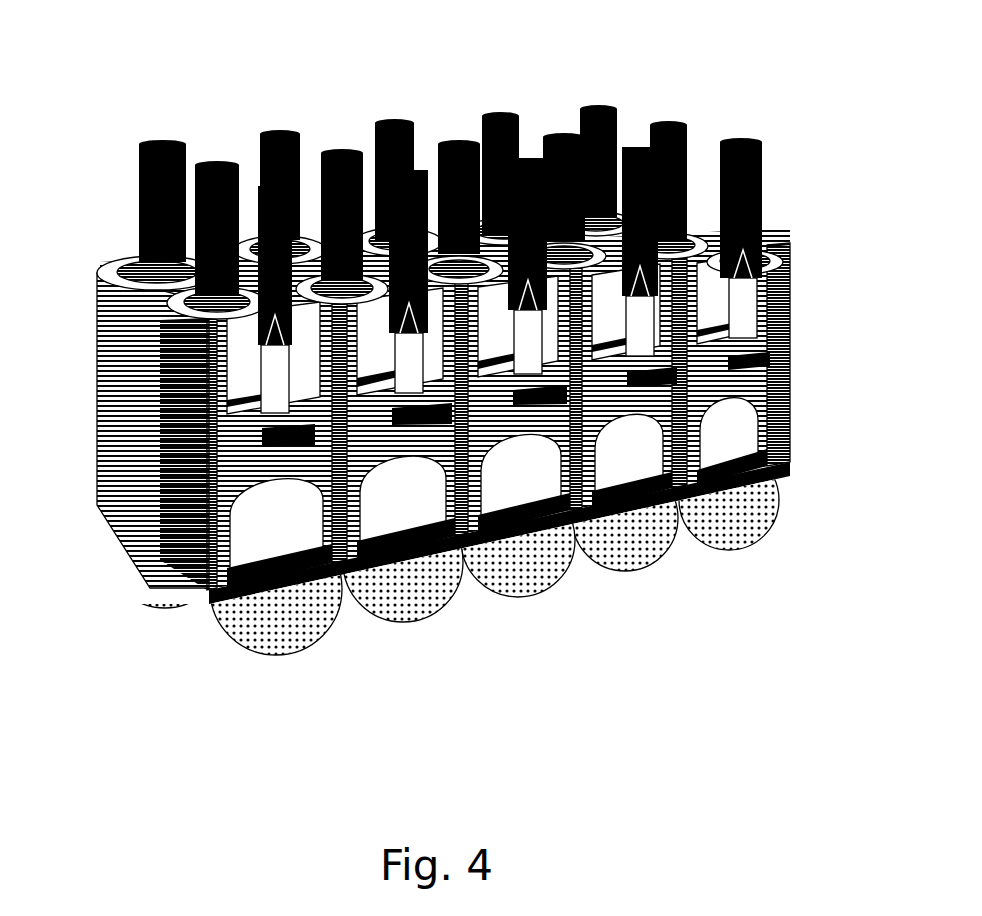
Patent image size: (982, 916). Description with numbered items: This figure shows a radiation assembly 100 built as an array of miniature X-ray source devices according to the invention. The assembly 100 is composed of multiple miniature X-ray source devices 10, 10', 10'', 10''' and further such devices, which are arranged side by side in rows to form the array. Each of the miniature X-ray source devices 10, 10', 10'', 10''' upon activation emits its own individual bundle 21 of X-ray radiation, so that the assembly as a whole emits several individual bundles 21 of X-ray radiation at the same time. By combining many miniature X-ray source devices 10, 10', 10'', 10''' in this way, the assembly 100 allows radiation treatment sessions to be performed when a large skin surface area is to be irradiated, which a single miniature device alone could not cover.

The assembly 100 is at (438, 372).
The miniature X-ray source device 10 is at (125, 454).
The miniature X-ray source device 10' is at (128, 364).
The miniature X-ray source device 10'' is at (802, 303).
The miniature X-ray source device 10''' is at (737, 177).
The bundle of X-ray radiation 21 is at (282, 640).